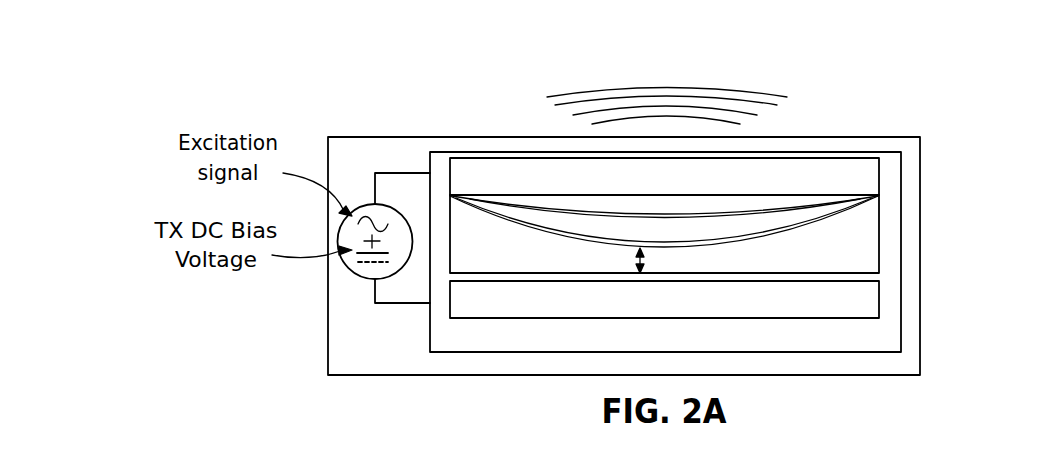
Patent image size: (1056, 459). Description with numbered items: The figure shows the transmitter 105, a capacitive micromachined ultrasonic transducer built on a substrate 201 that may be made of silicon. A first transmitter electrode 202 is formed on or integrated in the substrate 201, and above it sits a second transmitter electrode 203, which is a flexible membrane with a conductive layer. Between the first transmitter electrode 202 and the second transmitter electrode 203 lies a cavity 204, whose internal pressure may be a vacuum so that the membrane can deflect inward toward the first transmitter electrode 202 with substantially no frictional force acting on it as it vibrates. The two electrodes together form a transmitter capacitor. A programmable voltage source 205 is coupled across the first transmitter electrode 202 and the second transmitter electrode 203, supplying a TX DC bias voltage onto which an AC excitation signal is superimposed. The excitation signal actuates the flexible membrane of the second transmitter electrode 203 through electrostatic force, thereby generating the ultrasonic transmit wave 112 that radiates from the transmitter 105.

The transmitter 105 is at (192, 63).
The ultrasonic transmit wave 112 is at (760, 77).
The substrate 201 is at (901, 337).
The first transmitter electrode 202 is at (879, 303).
The second transmitter electrode 203 is at (880, 181).
The cavity 204 is at (866, 255).
The programmable voltage source 205 is at (353, 278).